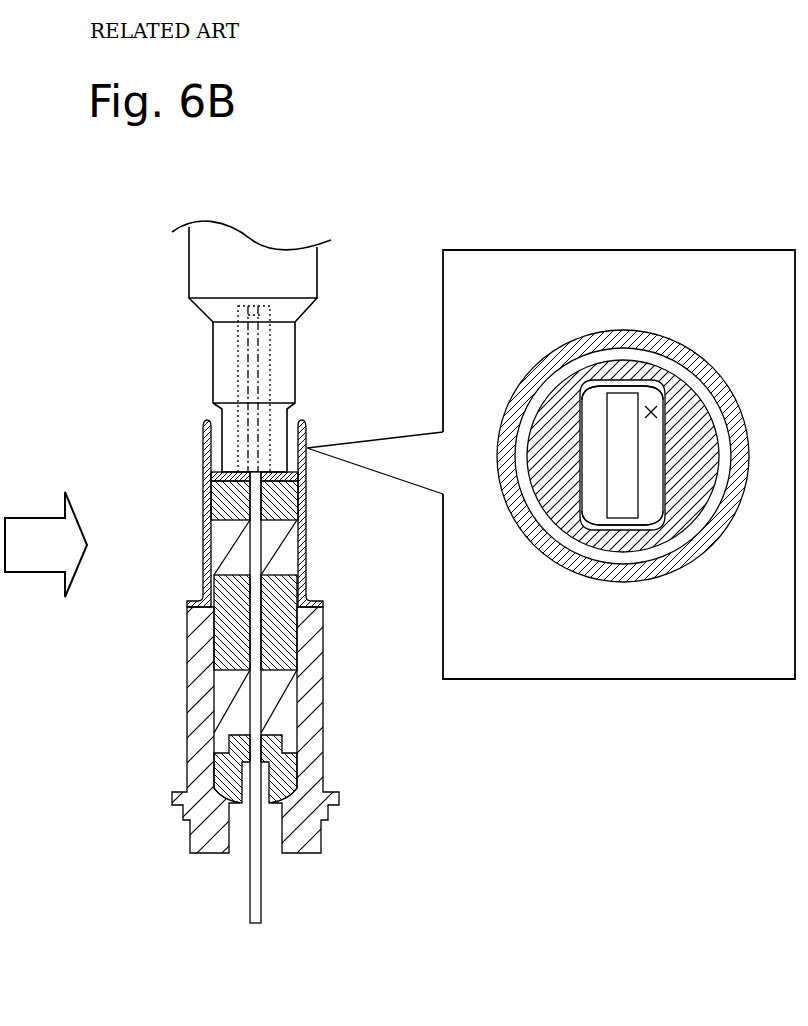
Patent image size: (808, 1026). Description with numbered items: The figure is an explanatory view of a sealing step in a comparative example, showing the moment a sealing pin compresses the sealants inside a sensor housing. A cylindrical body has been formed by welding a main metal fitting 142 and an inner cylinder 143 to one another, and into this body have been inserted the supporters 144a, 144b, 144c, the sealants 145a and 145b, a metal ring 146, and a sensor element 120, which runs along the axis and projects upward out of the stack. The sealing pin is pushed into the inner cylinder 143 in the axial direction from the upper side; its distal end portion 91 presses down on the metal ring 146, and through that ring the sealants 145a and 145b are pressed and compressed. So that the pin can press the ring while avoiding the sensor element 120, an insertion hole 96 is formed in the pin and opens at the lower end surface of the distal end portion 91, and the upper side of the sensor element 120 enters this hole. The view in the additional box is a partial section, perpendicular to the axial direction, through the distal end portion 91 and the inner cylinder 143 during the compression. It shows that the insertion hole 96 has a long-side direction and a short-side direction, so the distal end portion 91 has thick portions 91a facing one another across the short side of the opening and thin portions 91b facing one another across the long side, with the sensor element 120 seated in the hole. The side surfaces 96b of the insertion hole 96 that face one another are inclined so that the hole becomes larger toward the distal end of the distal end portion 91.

The sensor element 120 is at (247, 347).
The insertion hole 96 is at (238, 367).
The side surfaces 96b is at (602, 381).
The distal end portion 91 is at (554, 409).
The thick portions 91a is at (544, 451).
The thin portions 91b is at (636, 365).
The inner cylinder 143 is at (300, 522).
The main metal fitting 142 is at (318, 742).
The supporter 144a is at (232, 767).
The supporter 144b is at (230, 630).
The supporter 144c is at (227, 497).
The sealant 145a is at (232, 702).
The sealant 145b is at (232, 548).
The metal ring 146 is at (211, 472).